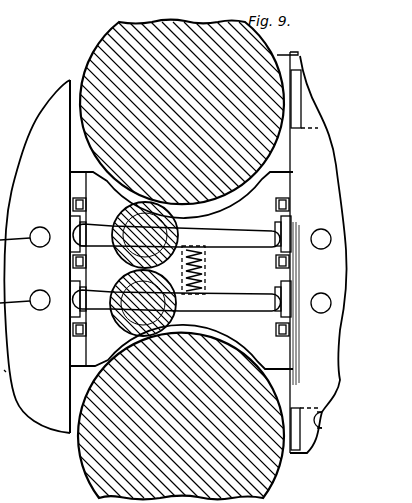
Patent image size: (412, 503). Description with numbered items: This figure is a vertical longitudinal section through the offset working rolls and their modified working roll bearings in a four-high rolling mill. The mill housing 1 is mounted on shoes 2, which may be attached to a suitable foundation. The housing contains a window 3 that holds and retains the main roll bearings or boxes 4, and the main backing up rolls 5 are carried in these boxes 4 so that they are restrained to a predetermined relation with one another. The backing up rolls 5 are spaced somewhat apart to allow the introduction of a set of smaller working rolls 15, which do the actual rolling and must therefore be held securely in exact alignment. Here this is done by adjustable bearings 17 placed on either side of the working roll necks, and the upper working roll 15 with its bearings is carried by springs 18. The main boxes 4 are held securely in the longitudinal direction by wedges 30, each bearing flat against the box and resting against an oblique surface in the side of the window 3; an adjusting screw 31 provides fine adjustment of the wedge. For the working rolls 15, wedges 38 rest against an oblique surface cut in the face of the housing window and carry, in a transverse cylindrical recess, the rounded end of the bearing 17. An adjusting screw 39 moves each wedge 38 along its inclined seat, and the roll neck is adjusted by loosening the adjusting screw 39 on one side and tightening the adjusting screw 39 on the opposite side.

The mill housing 1 is at (326, 175).
The shoes 2 is at (3, 383).
The window 3 is at (273, 355).
The main roll bearings or boxes 4 is at (280, 157).
The main backing up rolls 5 is at (262, 77).
The working rolls 15 is at (124, 214).
The adjustable bearings 17 is at (208, 233).
The springs 18 is at (207, 273).
The wedges 30 is at (296, 101).
The adjusting screw 31 is at (322, 425).
The wedges 38 is at (70, 243).
The adjusting screw 39 is at (325, 239).